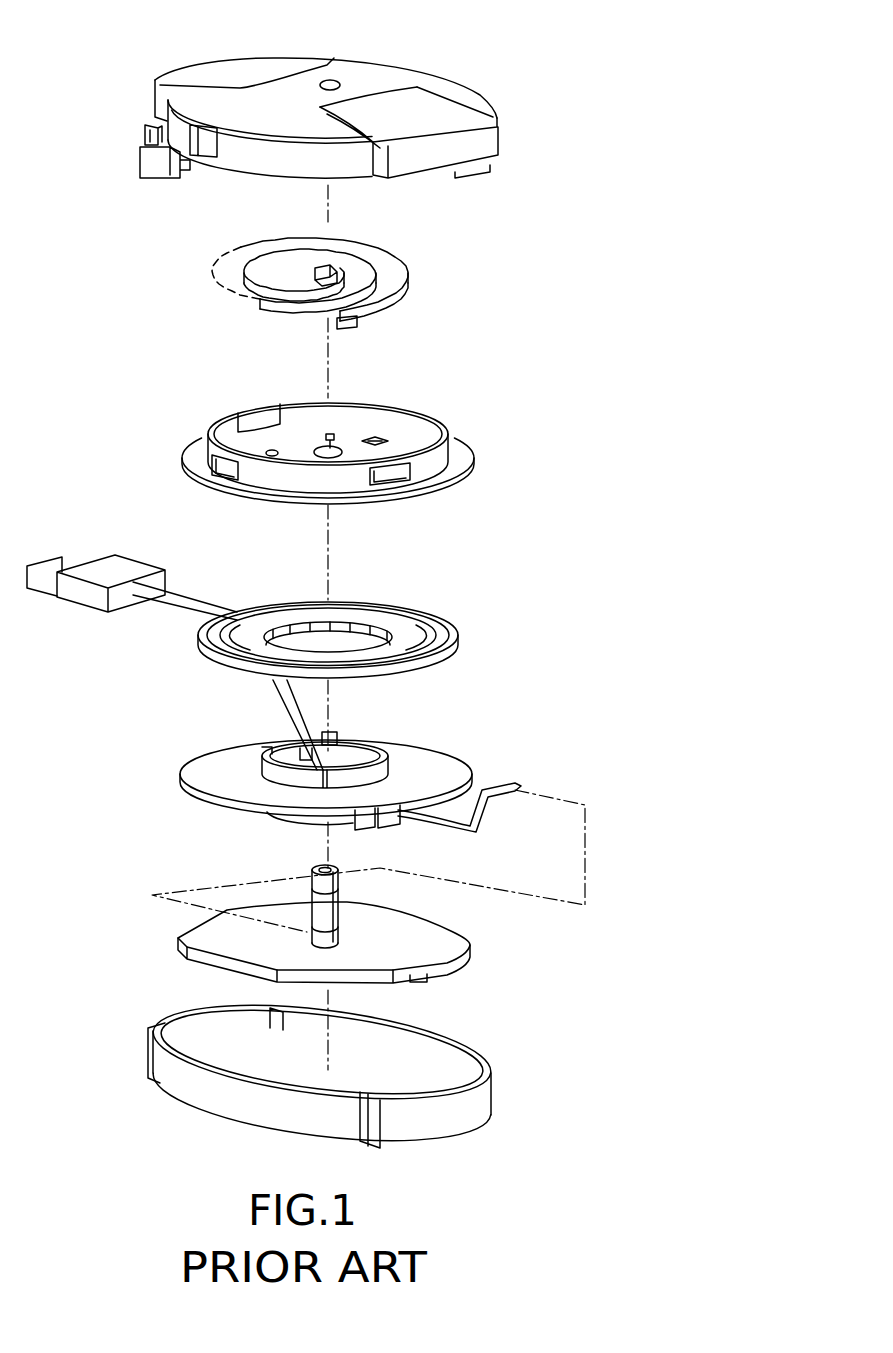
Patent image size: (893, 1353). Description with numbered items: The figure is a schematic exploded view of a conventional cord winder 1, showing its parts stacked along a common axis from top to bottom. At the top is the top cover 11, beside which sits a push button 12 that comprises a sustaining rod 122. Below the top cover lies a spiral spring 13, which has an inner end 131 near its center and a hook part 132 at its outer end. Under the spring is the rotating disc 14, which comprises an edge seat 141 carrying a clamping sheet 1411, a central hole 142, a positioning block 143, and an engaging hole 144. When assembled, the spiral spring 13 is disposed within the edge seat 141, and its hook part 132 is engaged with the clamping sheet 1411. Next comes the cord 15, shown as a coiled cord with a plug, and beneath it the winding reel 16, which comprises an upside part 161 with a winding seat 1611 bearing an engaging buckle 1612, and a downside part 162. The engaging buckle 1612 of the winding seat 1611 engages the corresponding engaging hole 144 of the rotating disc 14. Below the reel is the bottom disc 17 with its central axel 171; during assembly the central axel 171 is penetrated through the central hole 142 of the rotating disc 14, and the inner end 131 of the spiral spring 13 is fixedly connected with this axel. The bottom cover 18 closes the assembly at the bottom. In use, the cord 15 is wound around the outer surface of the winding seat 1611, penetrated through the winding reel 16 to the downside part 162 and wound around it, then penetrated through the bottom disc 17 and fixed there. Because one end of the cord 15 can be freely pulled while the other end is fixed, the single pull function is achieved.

The cord winder 1 is at (537, 13).
The top cover 11 is at (372, 73).
The push button 12 is at (147, 160).
The sustaining rod 122 is at (157, 128).
The spiral spring 13 is at (318, 270).
The inner end 131 is at (326, 275).
The hook part 132 is at (353, 324).
The rotating disc 14 is at (465, 445).
The edge seat 141 is at (437, 420).
The clamping sheet 1411 is at (262, 425).
The central hole 142 is at (335, 440).
The positioning block 143 is at (212, 466).
The engaging hole 144 is at (272, 452).
The cord 15 is at (440, 618).
The winding reel 16 is at (200, 748).
The upside part 161 is at (446, 765).
The winding seat 1611 is at (378, 752).
The engaging buckle 1612 is at (333, 738).
The downside part 162 is at (228, 812).
The bottom disc 17 is at (428, 943).
The central axel 171 is at (330, 910).
The bottom cover 18 is at (203, 1125).